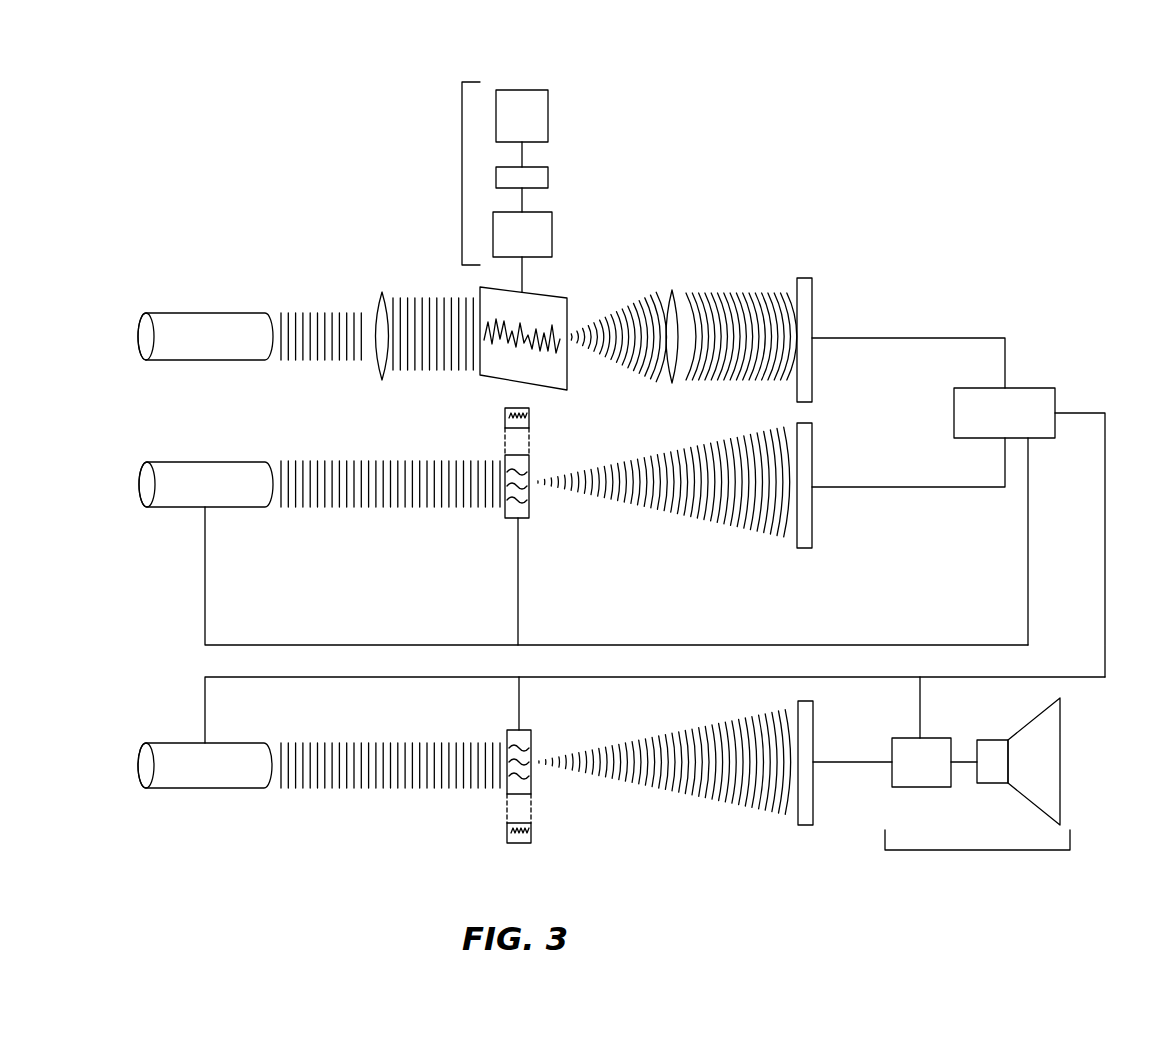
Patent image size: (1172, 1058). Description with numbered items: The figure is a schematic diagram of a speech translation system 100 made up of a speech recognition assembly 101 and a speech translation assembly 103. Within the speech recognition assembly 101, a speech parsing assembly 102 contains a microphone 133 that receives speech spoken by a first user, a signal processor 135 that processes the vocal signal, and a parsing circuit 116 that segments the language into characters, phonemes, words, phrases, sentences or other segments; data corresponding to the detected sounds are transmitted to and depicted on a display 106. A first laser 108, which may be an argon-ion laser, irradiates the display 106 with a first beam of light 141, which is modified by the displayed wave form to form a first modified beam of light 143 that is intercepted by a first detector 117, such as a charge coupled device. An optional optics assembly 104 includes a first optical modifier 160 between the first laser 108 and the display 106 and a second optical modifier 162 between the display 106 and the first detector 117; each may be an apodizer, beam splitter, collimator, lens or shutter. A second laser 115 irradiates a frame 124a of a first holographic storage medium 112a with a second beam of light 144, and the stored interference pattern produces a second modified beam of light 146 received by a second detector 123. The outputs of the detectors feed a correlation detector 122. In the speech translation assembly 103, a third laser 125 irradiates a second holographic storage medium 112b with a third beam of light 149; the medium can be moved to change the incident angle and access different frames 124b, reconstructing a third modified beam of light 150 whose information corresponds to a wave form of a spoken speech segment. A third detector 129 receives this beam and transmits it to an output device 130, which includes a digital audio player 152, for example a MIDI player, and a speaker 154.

The speech translation system 100 is at (791, 138).
The speech recognition assembly 101 is at (1058, 295).
The speech parsing assembly 102 is at (462, 173).
The speech translation assembly 103 is at (1130, 860).
The optics assembly 104 is at (356, 294).
The display 106 is at (553, 310).
The first laser 108 is at (180, 320).
The first holographic storage medium 112a is at (505, 512).
The second holographic storage medium 112b is at (507, 788).
The second laser 115 is at (170, 462).
The parsing circuit 116 is at (548, 235).
The first detector 117 is at (813, 307).
The correlation detector 122 is at (1025, 393).
The second detector 123 is at (813, 458).
The frames 124a is at (529, 415).
The frames 124b is at (531, 835).
The third laser 125 is at (205, 780).
The third detector 129 is at (803, 827).
The output device 130 is at (977, 850).
The microphone 133 is at (542, 119).
The signal processor 135 is at (542, 178).
The first beam of light 141 is at (330, 350).
The first modified beam of light 143 is at (742, 300).
The second beam of light 144 is at (335, 500).
The second modified beam of light 146 is at (697, 505).
The third beam of light 149 is at (338, 780).
The third modified beam of light 150 is at (713, 793).
The digital audio player 152 is at (928, 750).
The speaker 154 is at (1060, 745).
The first optical modifier 160 is at (387, 360).
The second optical modifier 162 is at (682, 296).